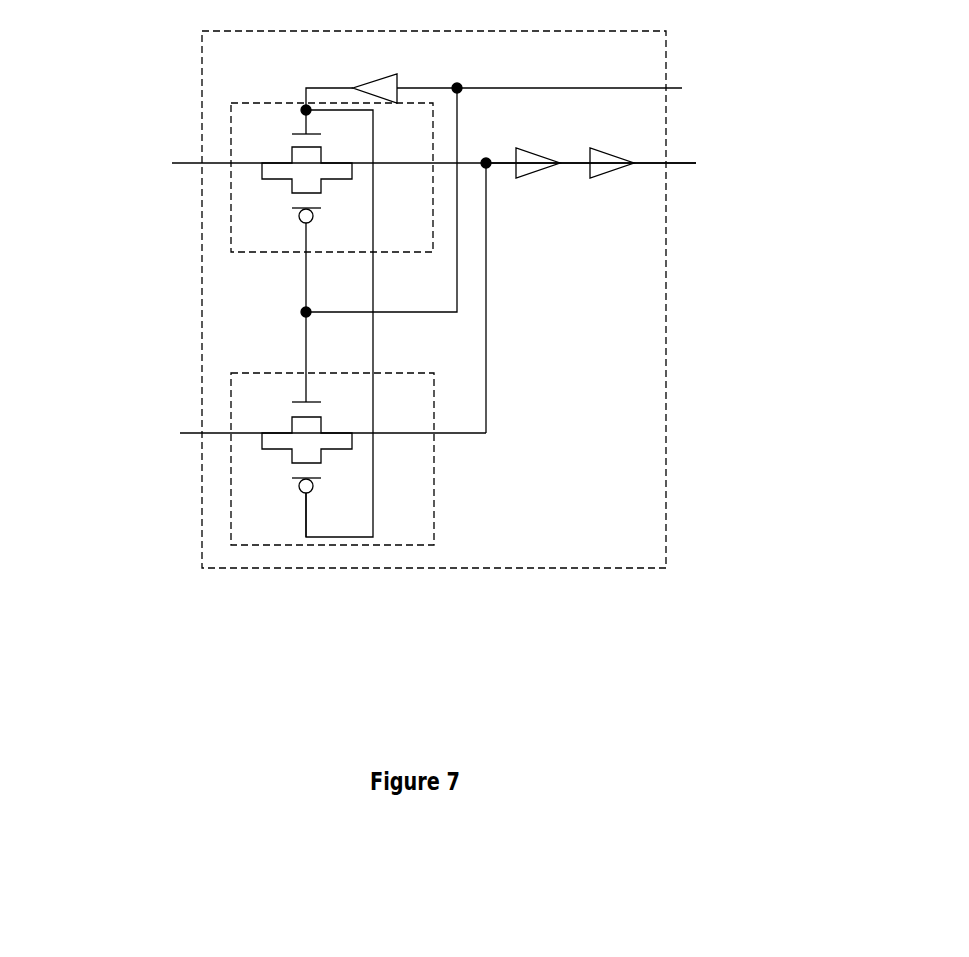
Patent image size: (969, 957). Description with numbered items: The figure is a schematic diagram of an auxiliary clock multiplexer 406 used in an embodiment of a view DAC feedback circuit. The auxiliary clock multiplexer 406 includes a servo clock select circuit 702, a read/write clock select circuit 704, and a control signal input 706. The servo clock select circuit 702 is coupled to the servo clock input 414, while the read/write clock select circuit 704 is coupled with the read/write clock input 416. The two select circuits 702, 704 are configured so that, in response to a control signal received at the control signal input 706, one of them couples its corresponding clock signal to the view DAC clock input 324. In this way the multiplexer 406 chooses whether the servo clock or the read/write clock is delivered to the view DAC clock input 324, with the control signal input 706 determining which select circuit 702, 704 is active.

The auxiliary clock multiplexer 406 is at (650, 73).
The read/write clock input 416 is at (187, 163).
The servo clock input 414 is at (197, 434).
The control signal input 706 is at (502, 91).
The read/write clock select circuit 704 is at (428, 236).
The servo clock select circuit 702 is at (428, 529).
The view DAC clock input 324 is at (690, 164).